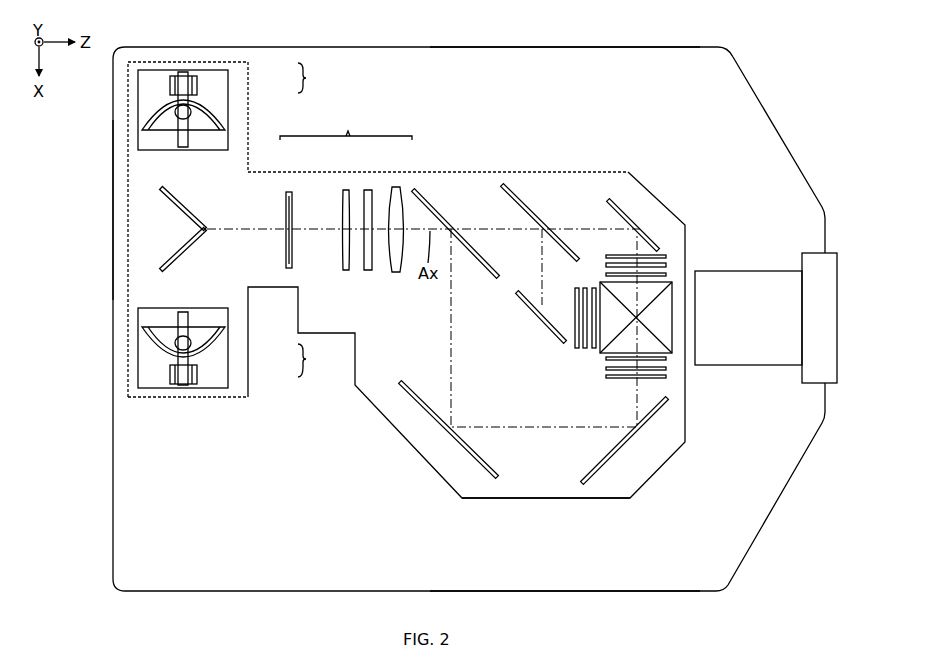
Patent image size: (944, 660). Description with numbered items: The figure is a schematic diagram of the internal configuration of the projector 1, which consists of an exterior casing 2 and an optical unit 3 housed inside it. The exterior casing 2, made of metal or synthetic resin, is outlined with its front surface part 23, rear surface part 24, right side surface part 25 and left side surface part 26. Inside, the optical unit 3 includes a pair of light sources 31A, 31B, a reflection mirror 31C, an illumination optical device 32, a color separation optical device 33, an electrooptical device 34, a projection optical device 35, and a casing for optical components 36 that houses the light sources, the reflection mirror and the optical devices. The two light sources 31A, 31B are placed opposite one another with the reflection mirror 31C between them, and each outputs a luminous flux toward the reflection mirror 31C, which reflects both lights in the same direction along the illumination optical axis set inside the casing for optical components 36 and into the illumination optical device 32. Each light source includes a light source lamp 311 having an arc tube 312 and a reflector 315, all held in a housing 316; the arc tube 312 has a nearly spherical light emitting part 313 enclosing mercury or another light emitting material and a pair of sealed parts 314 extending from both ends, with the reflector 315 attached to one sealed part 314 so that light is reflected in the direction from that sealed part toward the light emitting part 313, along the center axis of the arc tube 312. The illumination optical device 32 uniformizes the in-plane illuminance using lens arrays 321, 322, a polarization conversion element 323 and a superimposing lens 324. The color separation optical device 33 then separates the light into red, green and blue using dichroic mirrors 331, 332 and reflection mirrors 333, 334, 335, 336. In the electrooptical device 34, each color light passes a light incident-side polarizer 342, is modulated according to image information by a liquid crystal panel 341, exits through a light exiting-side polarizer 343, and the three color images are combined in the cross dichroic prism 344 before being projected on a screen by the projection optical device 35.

The projector 1 is at (826, 92).
The exterior casing 2 is at (731, 62).
The optical unit 3 is at (565, 117).
The front surface part 23 is at (826, 240).
The rear surface part 24 is at (113, 218).
The right side surface part 25 is at (570, 47).
The left side surface part 26 is at (575, 591).
The light source 31A is at (224, 397).
The light source 31B is at (238, 57).
The reflection mirror 31C is at (178, 255).
The light source lamp 311 is at (318, 220).
The arc tube 312 is at (190, 82).
The light emitting part 313 is at (178, 112).
The sealed part 314 is at (186, 73).
The reflector 315 is at (207, 105).
The housing 316 is at (222, 122).
The illumination optical device 32 is at (346, 129).
The lens array 321 is at (289, 192).
The lens array 322 is at (346, 190).
The polarization conversion element 323 is at (369, 190).
The superimposing lens 324 is at (397, 187).
The color separation optical device 33 is at (584, 184).
The dichroic mirror 331 is at (430, 208).
The dichroic mirror 332 is at (526, 210).
The reflection mirror 333 is at (410, 392).
The reflection mirror 334 is at (608, 460).
The reflection mirror 335 is at (525, 300).
The reflection mirror 336 is at (616, 200).
The electrooptical device 34 is at (674, 246).
The liquid crystal panel 341 is at (667, 265).
The light incident-side polarizer 342 is at (606, 257).
The light exiting-side polarizer 343 is at (667, 275).
The cross dichroic prism 344 is at (667, 308).
The projection optical device 35 is at (785, 271).
The casing for optical components 36 is at (512, 498).